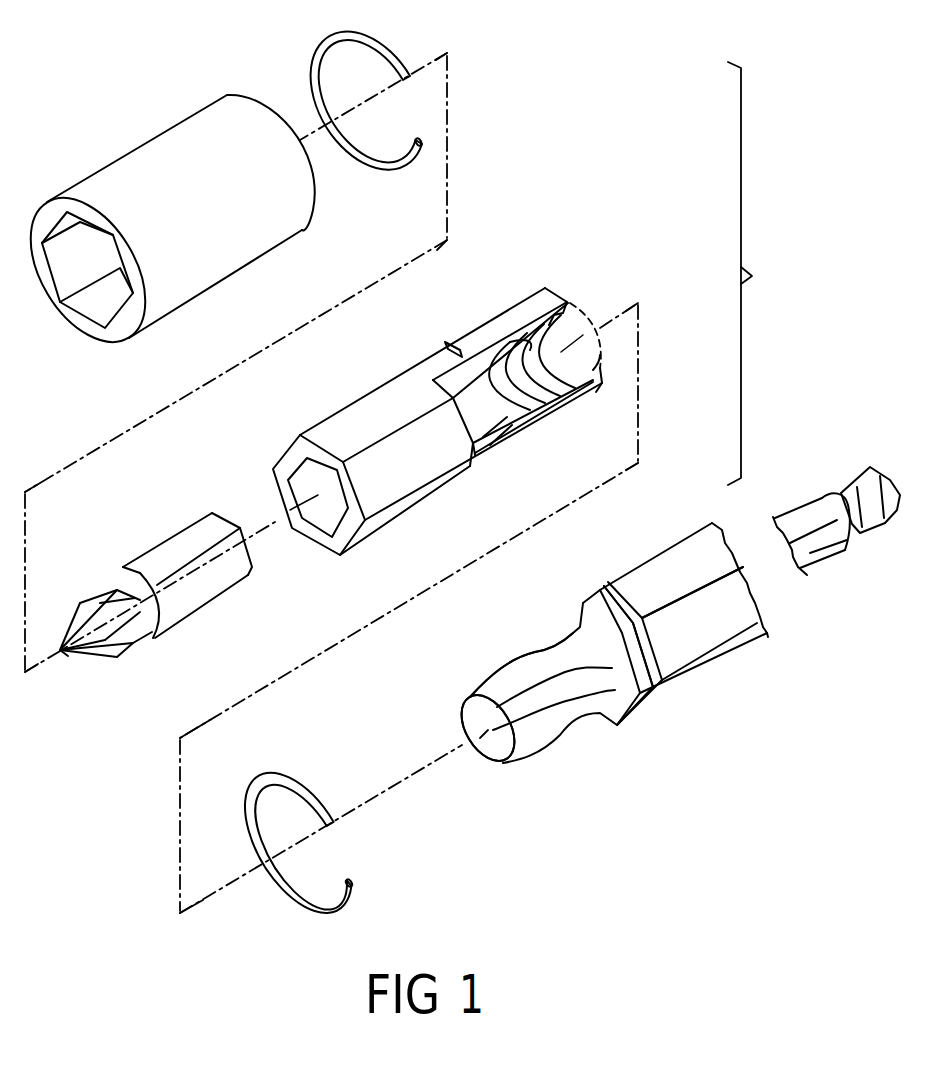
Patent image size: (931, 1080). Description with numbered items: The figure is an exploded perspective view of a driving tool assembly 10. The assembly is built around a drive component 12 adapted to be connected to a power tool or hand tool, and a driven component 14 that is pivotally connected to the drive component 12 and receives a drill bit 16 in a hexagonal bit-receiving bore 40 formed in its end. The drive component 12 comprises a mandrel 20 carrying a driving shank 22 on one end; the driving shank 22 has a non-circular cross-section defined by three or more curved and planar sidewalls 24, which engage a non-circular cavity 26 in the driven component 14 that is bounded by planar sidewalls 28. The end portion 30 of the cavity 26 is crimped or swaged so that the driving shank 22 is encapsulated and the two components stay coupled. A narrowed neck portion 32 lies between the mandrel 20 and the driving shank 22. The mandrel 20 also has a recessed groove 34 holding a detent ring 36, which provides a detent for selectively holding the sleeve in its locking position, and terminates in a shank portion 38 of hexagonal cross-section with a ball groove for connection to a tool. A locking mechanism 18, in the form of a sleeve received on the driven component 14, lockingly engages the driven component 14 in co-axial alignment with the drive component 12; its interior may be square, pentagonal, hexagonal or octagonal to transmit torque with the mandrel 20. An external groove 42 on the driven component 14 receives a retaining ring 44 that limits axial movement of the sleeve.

The driving tool assembly 10 is at (755, 273).
The drive component 12 is at (632, 715).
The driven component 14 is at (541, 280).
The drill bit 16 is at (188, 598).
The locking mechanism 18 is at (187, 153).
The mandrel 20 is at (665, 693).
The driving shank 22 is at (495, 660).
The curved and planar sidewalls 24 is at (490, 758).
The non-circular cavity 26 is at (485, 392).
The planar sidewalls 28 is at (487, 415).
The end portion 30 is at (600, 360).
The narrowed neck portion 32 is at (553, 637).
The recessed groove 34 is at (625, 610).
The detent ring 36 is at (285, 778).
The shank portion 38 is at (818, 503).
The hexagonal bit-receiving bore 40 is at (330, 524).
The external groove 42 is at (452, 345).
The retaining ring 44 is at (325, 47).